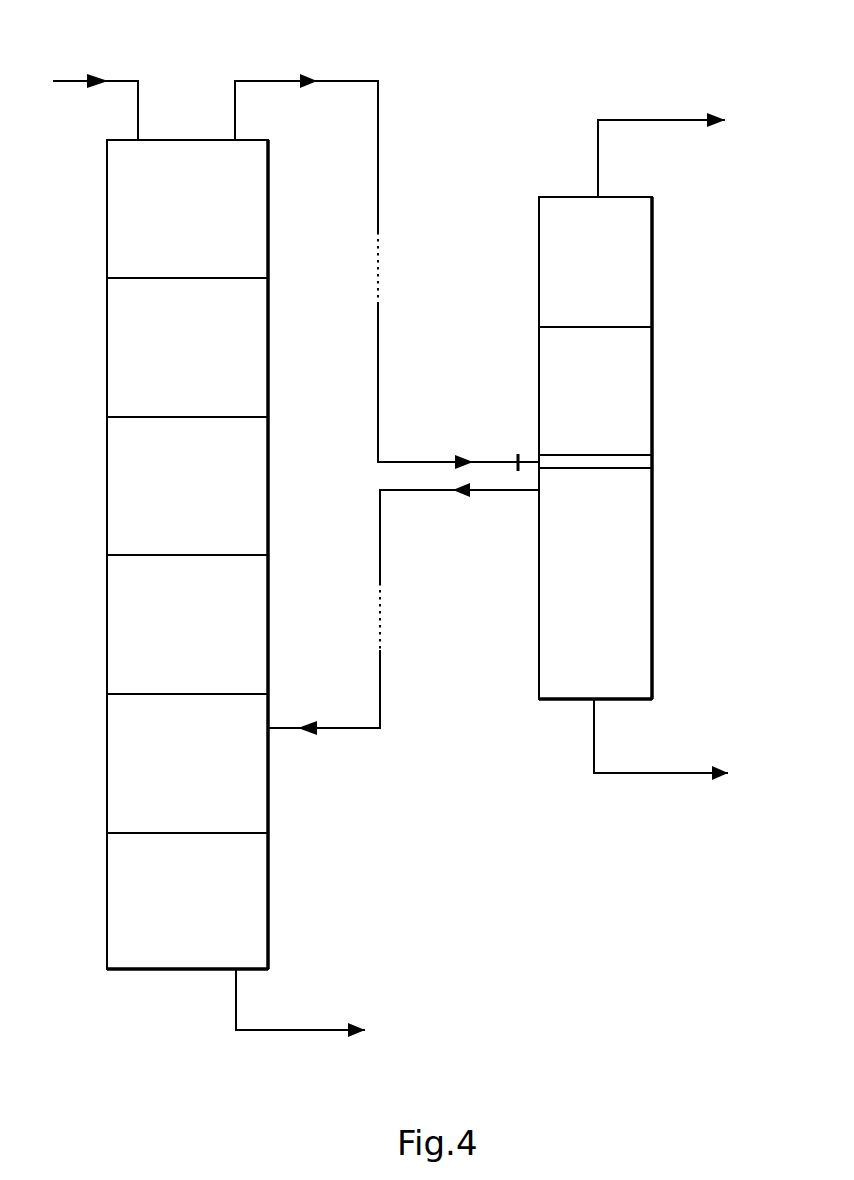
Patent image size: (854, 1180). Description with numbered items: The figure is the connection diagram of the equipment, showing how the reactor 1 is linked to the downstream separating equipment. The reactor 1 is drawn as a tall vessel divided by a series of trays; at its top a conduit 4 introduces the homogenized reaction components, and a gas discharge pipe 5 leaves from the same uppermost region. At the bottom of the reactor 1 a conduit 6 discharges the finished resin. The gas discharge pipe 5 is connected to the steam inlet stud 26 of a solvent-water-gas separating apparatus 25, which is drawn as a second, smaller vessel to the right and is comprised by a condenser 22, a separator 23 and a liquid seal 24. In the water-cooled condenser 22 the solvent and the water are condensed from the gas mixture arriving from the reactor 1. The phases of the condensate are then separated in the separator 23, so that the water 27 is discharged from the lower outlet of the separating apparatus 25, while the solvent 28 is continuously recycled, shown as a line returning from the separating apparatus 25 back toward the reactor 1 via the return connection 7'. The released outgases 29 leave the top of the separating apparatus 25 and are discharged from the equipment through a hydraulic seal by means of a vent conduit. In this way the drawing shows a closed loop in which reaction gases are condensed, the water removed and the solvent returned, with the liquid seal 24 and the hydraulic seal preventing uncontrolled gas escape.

The reactor 1 is at (107, 500).
The conduit 4 is at (70, 81).
The gas discharge pipe 5 is at (280, 81).
The conduit 6 is at (307, 1030).
The return line to column 7' is at (324, 713).
The condenser 22 is at (620, 418).
The separator 23 is at (628, 628).
The liquid seal 24 is at (617, 290).
The solvent-water-gas separating apparatus 25 is at (652, 540).
The steam inlet stud 26 is at (518, 455).
The water 27 is at (680, 773).
The solvent 28 is at (505, 491).
The released outgases 29 is at (645, 120).